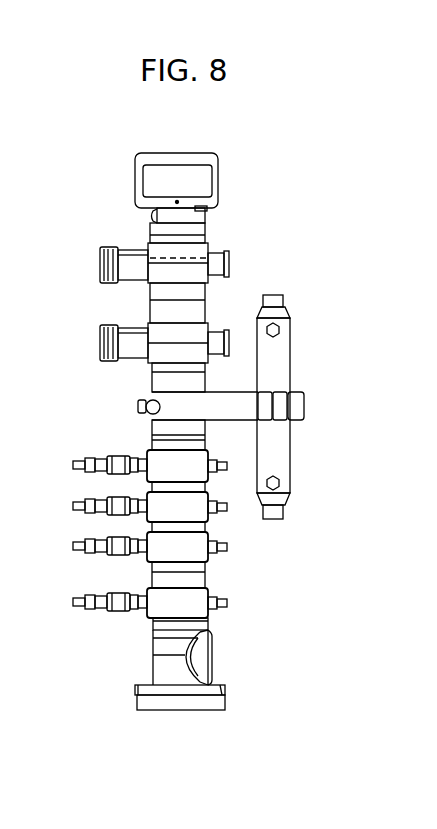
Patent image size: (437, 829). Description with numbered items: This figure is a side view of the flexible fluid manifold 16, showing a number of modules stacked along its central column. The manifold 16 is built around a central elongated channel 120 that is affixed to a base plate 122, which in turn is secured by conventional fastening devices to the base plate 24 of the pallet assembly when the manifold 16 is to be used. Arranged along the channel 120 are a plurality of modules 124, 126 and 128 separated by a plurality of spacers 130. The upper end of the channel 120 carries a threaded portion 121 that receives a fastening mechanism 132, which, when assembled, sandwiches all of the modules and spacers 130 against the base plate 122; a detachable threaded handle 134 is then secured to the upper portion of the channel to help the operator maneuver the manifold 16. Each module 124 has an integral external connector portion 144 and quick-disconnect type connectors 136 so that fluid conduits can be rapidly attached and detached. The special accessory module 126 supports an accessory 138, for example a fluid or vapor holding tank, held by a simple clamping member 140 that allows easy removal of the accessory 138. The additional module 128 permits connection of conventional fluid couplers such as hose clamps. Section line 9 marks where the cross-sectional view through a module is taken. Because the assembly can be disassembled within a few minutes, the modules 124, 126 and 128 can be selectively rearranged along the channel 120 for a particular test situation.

The flexible fluid manifold 16 is at (255, 184).
The base plate of the pallet assembly 24 is at (217, 702).
The section line 9- 9 is at (100, 258).
The central elongated channel 120 is at (200, 650).
The threaded portion 121 is at (155, 220).
The base plate 122 is at (220, 688).
The module 124 is at (188, 592).
The accessory module 126 is at (173, 408).
The module for conventional fluid couplers 128 is at (127, 328).
The spacer 130 is at (162, 485).
The fastening mechanism 132 is at (208, 210).
The detachable handle 134 is at (180, 163).
The quick-disconnect connector 136 is at (117, 468).
The accessory 138 is at (280, 363).
The clamping member 140 is at (297, 405).
The external connector portion 144 is at (229, 263).